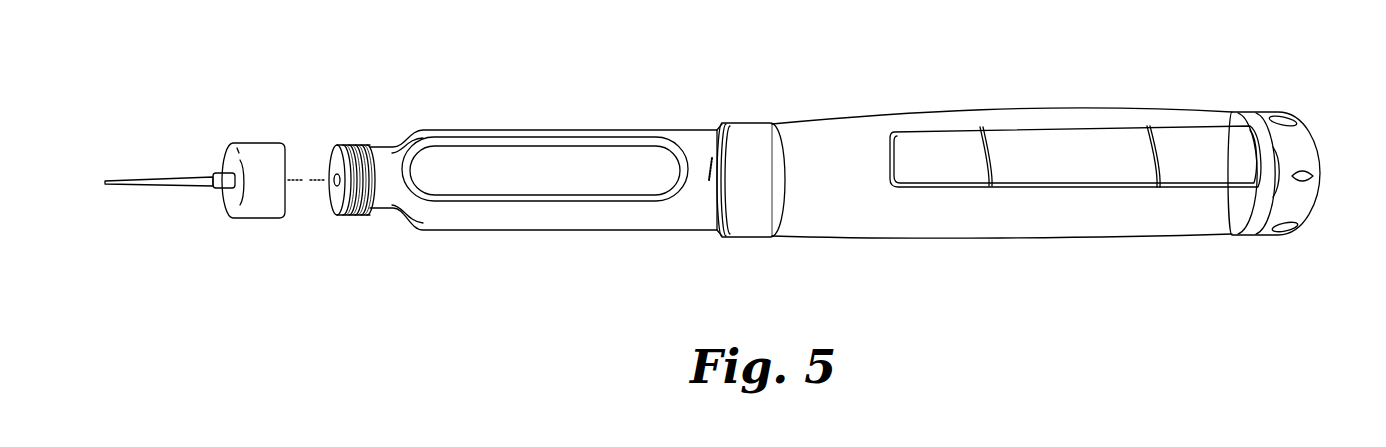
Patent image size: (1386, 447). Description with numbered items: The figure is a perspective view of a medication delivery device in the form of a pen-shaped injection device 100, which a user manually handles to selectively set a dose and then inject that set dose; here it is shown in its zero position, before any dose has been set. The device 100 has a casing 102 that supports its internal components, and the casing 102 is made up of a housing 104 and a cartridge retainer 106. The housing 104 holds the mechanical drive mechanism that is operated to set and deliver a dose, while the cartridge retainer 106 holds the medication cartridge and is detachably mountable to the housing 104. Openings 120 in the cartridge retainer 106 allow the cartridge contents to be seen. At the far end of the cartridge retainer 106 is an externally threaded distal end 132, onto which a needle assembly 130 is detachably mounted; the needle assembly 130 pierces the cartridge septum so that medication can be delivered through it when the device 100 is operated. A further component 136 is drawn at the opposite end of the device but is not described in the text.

The pen-shaped injection device 100 is at (733, 121).
The casing 102 is at (1016, 135).
The housing 104 is at (935, 127).
The cartridge retainer 106 is at (543, 133).
The openings 120 is at (474, 163).
The needle assembly 130 is at (207, 128).
The externally threaded distal end 132 is at (348, 147).
The end cap 136 is at (1300, 153).